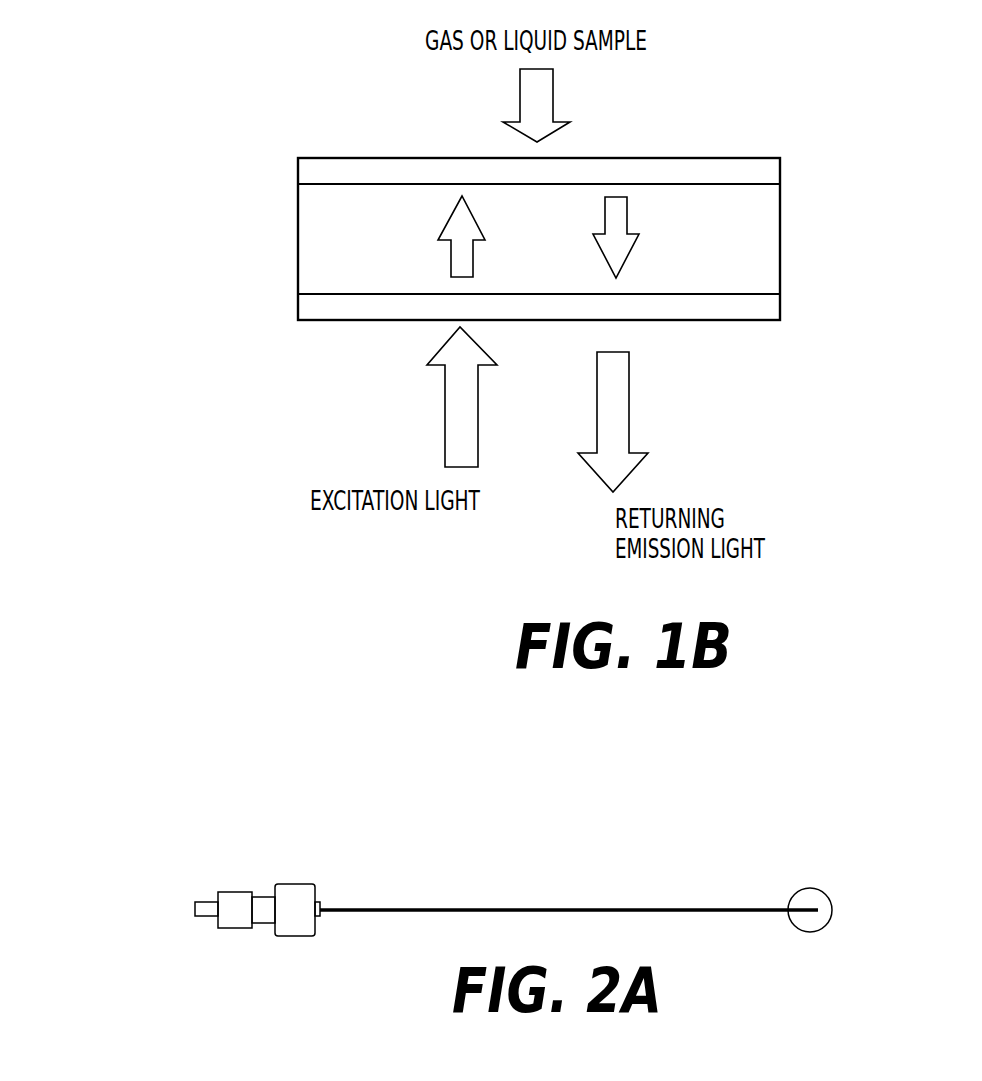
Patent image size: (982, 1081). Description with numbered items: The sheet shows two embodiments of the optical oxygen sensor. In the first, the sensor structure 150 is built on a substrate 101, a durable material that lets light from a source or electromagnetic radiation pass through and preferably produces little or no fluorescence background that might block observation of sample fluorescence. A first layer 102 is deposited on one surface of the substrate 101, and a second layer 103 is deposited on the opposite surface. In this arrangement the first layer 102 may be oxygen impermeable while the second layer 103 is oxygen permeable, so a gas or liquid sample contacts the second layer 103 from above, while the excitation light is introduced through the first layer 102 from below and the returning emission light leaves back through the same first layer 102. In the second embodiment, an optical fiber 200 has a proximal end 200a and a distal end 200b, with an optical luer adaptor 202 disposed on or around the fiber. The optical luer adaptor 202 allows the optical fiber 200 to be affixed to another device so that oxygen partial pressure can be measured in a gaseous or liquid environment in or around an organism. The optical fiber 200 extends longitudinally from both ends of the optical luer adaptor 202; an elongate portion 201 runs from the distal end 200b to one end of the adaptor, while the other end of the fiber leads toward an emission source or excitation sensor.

In FIG. 1B, the optical sensor 150 is at (280, 85).
In FIG. 1B, the second layer 103 is at (298, 170).
In FIG. 1B, the substrate 101 is at (298, 237).
In FIG. 1B, the first layer 102 is at (298, 306).
In FIG. 2A, the optical fiber 200 is at (185, 814).
In FIG. 2A, the proximal end 200a is at (205, 917).
In FIG. 2A, the distal end 200b is at (797, 924).
In FIG. 2A, the elongate portion 201 is at (410, 907).
In FIG. 2A, the optical luer adaptor 202 is at (232, 892).